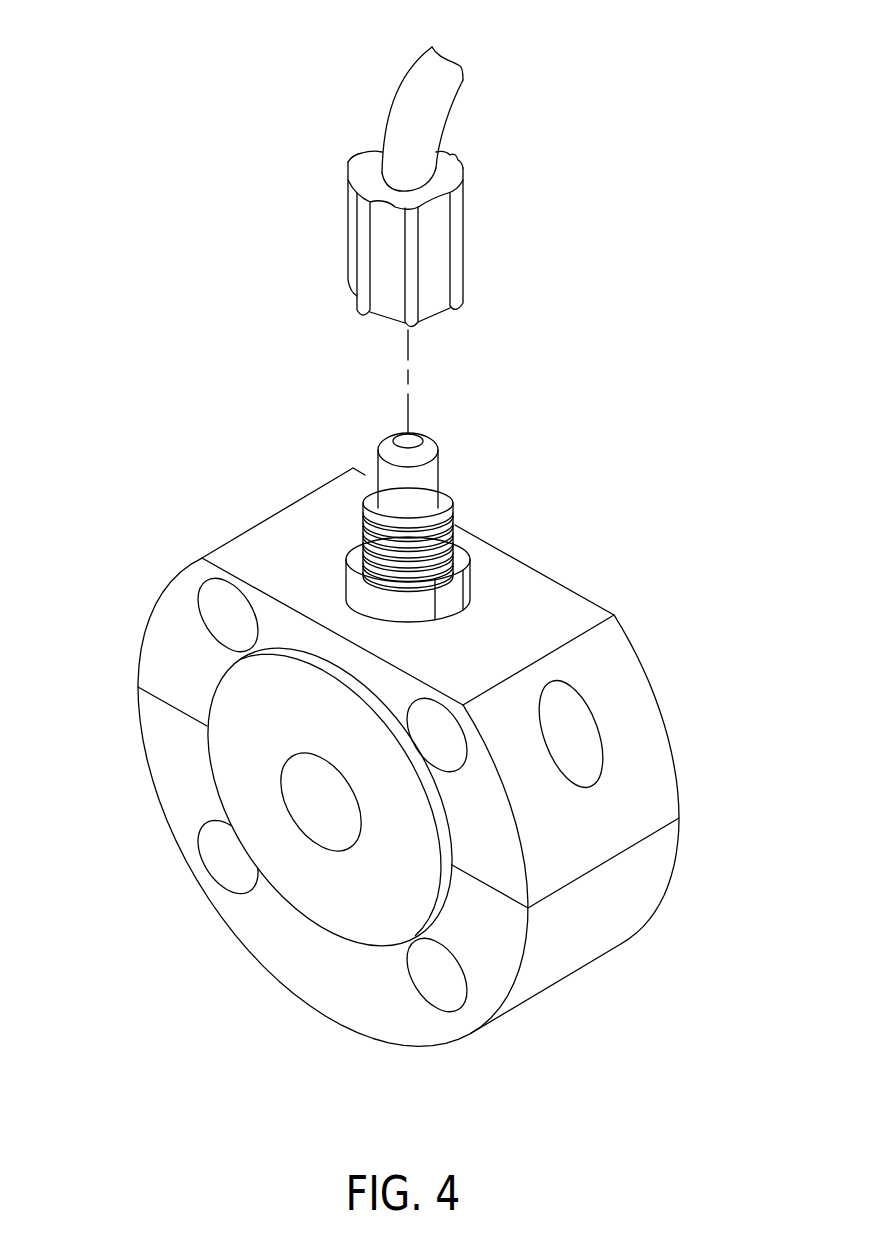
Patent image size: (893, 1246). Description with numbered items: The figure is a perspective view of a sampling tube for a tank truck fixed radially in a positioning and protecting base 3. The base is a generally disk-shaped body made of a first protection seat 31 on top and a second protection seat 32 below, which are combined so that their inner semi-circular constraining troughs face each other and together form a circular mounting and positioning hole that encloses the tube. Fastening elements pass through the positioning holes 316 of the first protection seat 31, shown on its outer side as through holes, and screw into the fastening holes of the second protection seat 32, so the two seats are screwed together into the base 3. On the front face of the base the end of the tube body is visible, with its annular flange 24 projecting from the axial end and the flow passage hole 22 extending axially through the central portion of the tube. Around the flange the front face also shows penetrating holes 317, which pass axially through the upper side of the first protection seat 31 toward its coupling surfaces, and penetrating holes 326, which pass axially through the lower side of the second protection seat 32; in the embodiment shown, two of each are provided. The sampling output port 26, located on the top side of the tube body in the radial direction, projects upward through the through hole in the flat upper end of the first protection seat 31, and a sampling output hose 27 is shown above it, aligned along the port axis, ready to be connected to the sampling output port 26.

The positioning and protecting base 3 is at (400, 739).
The flow passage hole 22 is at (325, 810).
The flange 24 is at (353, 893).
The sampling output port 26 is at (370, 525).
The sampling output hose 27 is at (365, 172).
The first protection seat 31 is at (404, 757).
The second protection seat 32 is at (391, 860).
The positioning hole 316 is at (583, 753).
The penetrating hole 317 is at (232, 612).
The penetrating hole 326 is at (220, 853).